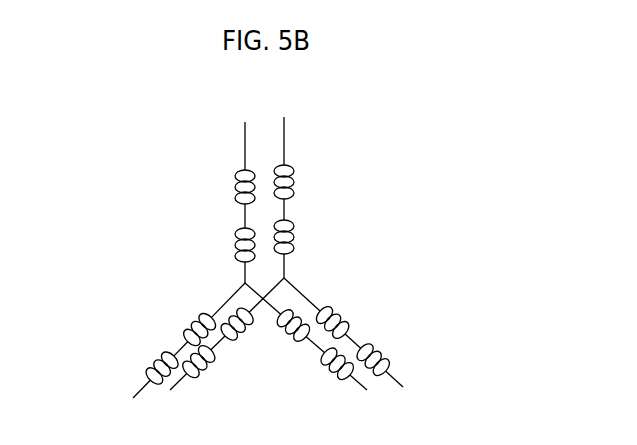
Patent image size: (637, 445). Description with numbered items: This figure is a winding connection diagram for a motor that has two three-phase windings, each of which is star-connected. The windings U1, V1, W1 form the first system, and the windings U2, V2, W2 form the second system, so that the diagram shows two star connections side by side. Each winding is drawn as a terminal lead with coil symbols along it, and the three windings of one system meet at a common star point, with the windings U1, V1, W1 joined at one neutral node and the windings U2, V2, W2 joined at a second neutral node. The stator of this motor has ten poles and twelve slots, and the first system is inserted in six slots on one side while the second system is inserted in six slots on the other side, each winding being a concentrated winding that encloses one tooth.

The winding U1 is at (244, 192).
The winding U2 is at (287, 189).
The winding V1 is at (176, 352).
The winding V2 is at (217, 350).
The winding W1 is at (316, 351).
The winding W2 is at (357, 348).